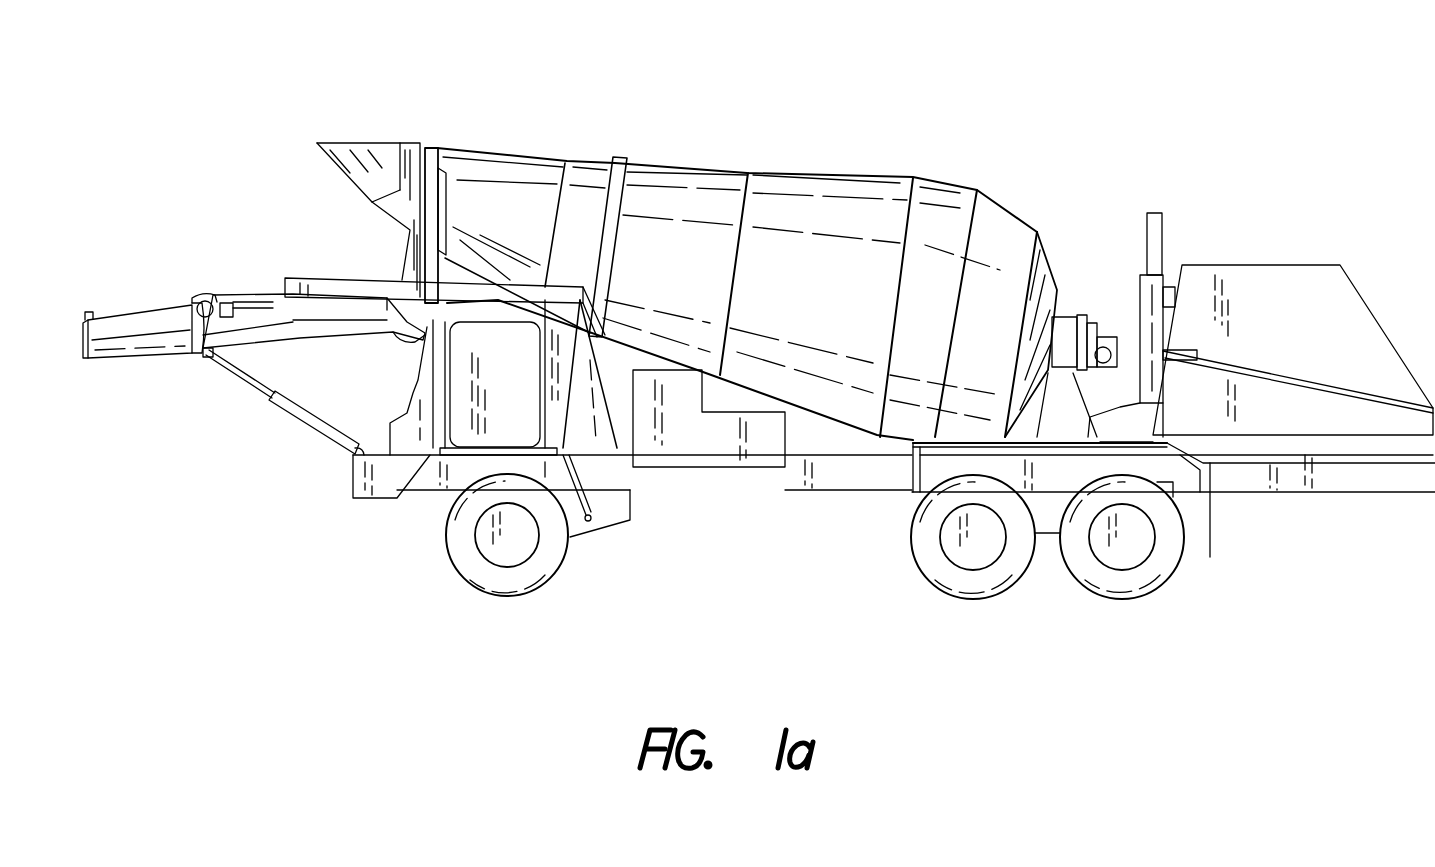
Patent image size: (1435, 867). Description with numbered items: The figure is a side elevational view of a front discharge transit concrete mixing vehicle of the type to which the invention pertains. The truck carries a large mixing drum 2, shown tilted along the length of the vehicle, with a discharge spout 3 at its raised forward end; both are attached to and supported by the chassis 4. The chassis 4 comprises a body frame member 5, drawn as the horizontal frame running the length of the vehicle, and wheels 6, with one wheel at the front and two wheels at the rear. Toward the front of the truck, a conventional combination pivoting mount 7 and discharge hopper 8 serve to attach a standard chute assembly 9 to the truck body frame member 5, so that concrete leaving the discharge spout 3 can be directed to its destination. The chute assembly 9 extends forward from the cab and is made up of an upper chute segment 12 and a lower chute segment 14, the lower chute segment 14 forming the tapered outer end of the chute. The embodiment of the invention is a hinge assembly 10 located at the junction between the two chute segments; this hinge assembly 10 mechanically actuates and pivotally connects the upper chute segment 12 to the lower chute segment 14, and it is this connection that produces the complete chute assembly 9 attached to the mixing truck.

The mixing drum 2 is at (693, 183).
The discharge spout 3 is at (372, 143).
The chassis 4 is at (818, 508).
The body frame member 5 is at (728, 482).
The wheels 6 is at (537, 590).
The pivoting mount 7 is at (340, 281).
The discharge hopper 8 is at (408, 249).
The chute assembly 9 is at (194, 392).
The hinge assembly 10 is at (183, 273).
The upper chute segment 12 is at (283, 337).
The lower chute segment 14 is at (135, 347).